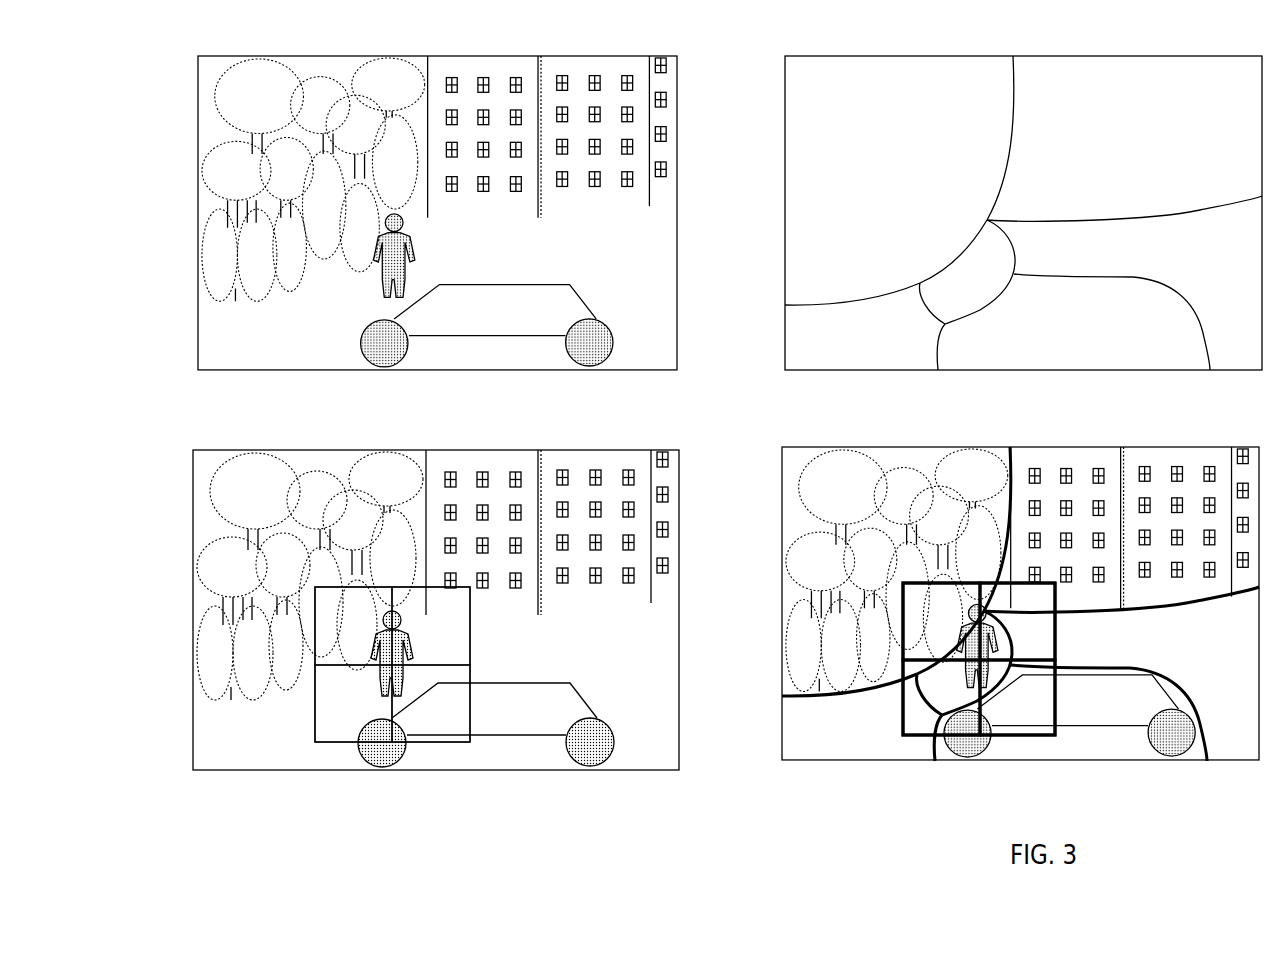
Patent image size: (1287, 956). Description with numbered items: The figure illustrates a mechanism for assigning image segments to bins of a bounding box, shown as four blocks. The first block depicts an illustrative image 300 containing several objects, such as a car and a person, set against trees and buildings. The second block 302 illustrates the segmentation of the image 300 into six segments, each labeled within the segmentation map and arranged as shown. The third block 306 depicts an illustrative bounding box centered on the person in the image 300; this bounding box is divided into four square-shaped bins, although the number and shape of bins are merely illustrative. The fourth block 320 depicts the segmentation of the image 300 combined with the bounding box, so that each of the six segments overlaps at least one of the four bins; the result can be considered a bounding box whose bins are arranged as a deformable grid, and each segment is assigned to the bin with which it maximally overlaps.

The image 300 is at (678, 100).
The segmentation block 302 is at (784, 222).
The bounding box block 306 is at (680, 495).
The combined segmentation and bounding box block 320 is at (782, 597).